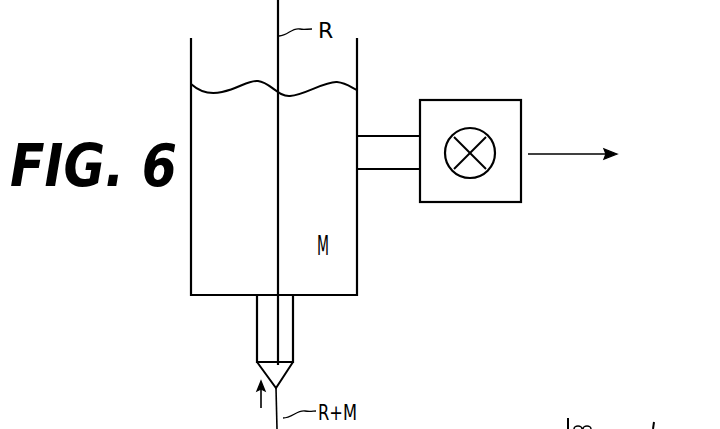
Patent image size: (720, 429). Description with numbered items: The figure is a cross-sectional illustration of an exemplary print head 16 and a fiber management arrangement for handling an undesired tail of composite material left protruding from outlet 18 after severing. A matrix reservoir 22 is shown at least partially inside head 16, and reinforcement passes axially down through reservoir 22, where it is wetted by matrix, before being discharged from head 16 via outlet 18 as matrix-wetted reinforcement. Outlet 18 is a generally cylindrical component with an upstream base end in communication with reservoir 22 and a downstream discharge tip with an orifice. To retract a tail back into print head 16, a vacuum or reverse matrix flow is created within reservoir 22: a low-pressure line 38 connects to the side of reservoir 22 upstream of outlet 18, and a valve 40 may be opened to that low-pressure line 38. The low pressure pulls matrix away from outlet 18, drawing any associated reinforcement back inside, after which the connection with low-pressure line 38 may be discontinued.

The print head 16 is at (444, 73).
The outlet 18 is at (294, 330).
The matrix reservoir 22 is at (215, 126).
The low-pressure line 38 is at (399, 164).
The valve 40 is at (514, 194).